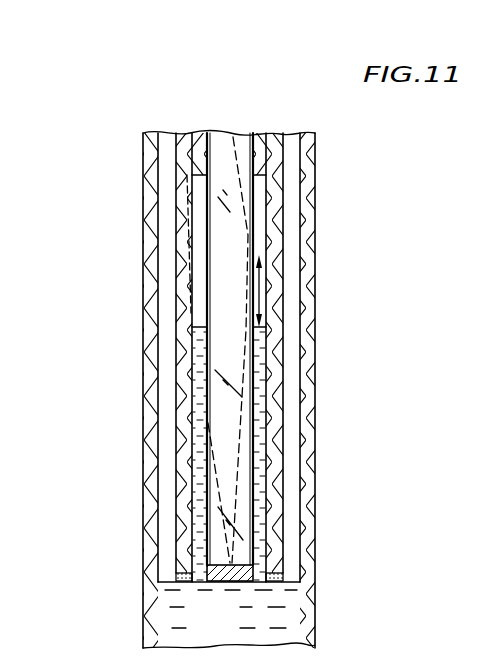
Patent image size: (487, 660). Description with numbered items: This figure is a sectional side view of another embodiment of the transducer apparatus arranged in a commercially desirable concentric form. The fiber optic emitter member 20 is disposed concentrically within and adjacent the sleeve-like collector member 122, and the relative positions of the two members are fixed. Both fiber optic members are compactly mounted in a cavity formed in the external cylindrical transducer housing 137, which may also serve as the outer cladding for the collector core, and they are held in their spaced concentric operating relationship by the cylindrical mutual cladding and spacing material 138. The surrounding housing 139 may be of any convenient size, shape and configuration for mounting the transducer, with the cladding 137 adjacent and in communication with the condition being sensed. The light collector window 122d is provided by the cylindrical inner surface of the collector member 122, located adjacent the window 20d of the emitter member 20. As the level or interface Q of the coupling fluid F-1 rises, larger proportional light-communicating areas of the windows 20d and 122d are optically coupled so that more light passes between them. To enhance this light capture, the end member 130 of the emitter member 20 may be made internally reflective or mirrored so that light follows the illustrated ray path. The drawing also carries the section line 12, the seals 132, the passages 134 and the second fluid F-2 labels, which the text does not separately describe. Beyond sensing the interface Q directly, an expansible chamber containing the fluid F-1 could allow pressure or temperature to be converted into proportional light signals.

The section line 12- 12 is at (80, 428).
The emitter member 20 is at (228, 140).
The window of the emitter 20d is at (207, 245).
The collector member 122 is at (260, 137).
The light collector window 122d is at (264, 240).
The end member of the emitter member 130 is at (240, 583).
The seal 132 is at (284, 578).
The fluid passage 134 is at (203, 197).
The transducer housing 137 is at (288, 387).
The cladding and spacing material 138 is at (188, 142).
The housing 139 is at (308, 290).
The interface Q is at (198, 326).
The coupling fluid F-1 is at (232, 630).
The second fluid F-2 is at (261, 186).